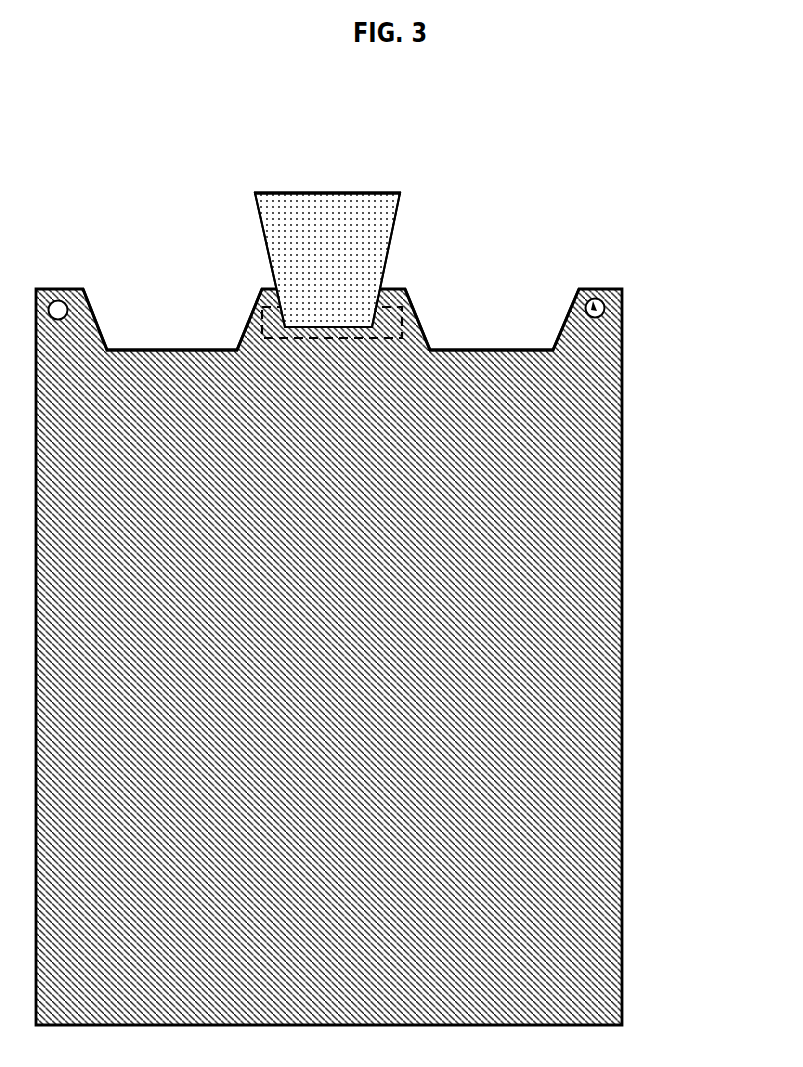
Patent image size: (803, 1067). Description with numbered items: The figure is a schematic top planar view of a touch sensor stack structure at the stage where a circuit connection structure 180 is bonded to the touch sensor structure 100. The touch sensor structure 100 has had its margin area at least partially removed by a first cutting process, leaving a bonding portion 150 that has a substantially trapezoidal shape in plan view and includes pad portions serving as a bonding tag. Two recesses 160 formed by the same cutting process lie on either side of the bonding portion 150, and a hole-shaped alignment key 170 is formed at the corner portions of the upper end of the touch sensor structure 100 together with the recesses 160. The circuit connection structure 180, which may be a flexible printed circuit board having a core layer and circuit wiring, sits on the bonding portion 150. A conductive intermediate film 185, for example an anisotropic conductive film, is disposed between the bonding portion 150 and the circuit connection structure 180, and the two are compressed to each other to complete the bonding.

The touch sensor structure 100 is at (600, 802).
The bonding portion 150 is at (252, 322).
The recess 160 is at (532, 317).
The alignment key 170 is at (597, 292).
The circuit connection structure 180 is at (321, 205).
The conductive intermediate film 185 is at (386, 293).